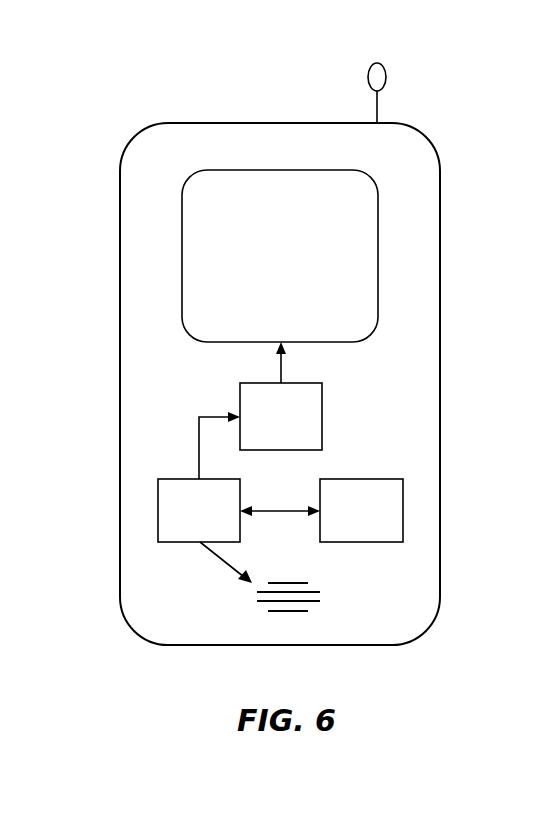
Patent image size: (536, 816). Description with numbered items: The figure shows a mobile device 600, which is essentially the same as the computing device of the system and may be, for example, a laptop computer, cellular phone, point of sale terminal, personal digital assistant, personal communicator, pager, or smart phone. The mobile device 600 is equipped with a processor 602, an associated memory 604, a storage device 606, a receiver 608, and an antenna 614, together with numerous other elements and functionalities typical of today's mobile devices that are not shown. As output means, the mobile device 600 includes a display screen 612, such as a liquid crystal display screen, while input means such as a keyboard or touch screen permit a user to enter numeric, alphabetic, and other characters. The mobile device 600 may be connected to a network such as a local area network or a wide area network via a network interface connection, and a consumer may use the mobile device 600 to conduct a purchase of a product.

The mobile device 600 is at (194, 94).
The processor 602 is at (158, 510).
The associated memory 604 is at (403, 510).
The storage device 606 is at (322, 416).
The receiver 608 is at (290, 614).
The display screen 612 is at (350, 259).
The antenna 614 is at (386, 78).